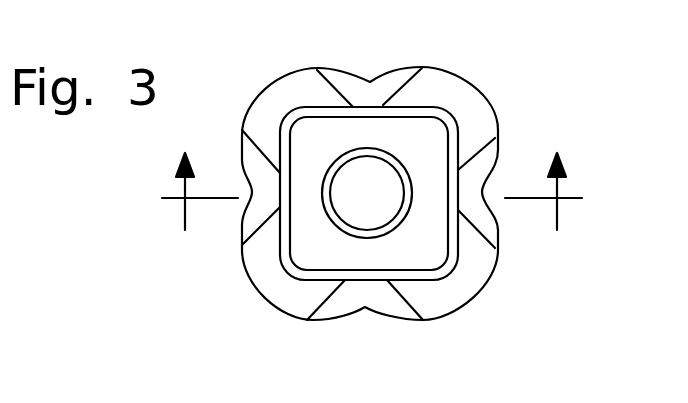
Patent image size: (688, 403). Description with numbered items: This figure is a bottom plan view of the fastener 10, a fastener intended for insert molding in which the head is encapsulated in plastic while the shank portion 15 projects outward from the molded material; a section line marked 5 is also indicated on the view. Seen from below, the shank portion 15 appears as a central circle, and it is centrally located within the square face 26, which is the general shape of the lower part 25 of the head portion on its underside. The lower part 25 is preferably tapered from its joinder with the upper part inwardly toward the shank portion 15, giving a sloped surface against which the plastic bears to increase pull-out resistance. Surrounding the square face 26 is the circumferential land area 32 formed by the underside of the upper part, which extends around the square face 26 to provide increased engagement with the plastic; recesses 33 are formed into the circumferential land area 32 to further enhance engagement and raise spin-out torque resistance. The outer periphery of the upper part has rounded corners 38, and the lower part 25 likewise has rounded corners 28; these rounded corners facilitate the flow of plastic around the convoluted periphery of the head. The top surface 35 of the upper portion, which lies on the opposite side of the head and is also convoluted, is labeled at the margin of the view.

The fastener 10 is at (183, 310).
The shank portion 15 is at (393, 187).
The lower part 25 is at (362, 257).
The square face 26 is at (422, 257).
The corners 28 is at (477, 297).
The circumferential land area 32 is at (292, 95).
The recesses 33 is at (388, 82).
The top surface 35 is at (605, 402).
The rounded corners 38 is at (478, 96).
The section line 5- 5 is at (372, 205).